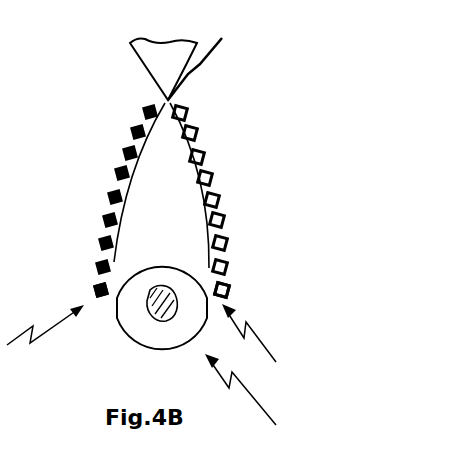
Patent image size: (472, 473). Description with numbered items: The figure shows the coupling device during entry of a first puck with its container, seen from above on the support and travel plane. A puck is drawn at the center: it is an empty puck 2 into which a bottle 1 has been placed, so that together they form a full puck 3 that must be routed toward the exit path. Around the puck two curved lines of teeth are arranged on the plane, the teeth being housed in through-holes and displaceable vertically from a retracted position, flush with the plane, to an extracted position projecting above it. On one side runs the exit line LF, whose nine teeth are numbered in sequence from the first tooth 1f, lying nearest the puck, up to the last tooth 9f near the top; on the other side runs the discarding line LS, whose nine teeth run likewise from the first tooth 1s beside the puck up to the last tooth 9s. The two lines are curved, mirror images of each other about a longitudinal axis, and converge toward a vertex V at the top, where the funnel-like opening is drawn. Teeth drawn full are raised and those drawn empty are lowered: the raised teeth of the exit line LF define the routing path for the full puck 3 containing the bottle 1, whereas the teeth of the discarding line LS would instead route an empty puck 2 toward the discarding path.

The bottle 1 is at (172, 323).
The empty puck 2 is at (130, 338).
The full puck 3 is at (251, 399).
The tooth of the exit line 9f is at (150, 108).
The tooth of the discarding line 9s is at (195, 105).
The tooth of the exit line 1f is at (96, 293).
The tooth of the discarding line 1s is at (230, 292).
The vertex V is at (185, 58).
The exit line LF is at (45, 345).
The discarding line LS is at (266, 341).